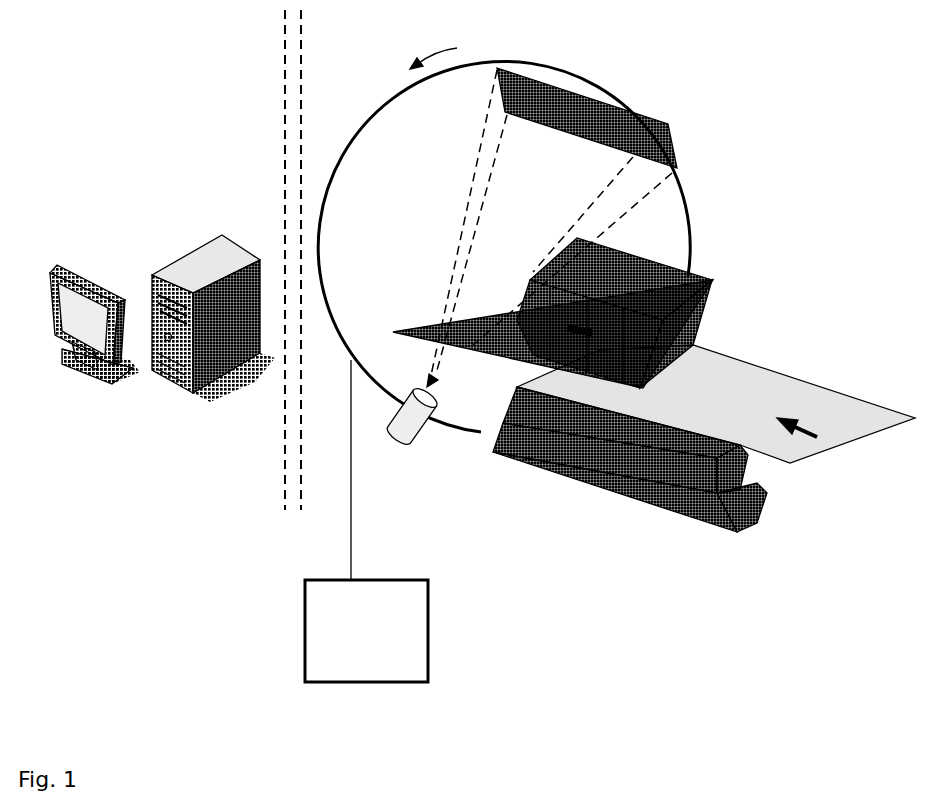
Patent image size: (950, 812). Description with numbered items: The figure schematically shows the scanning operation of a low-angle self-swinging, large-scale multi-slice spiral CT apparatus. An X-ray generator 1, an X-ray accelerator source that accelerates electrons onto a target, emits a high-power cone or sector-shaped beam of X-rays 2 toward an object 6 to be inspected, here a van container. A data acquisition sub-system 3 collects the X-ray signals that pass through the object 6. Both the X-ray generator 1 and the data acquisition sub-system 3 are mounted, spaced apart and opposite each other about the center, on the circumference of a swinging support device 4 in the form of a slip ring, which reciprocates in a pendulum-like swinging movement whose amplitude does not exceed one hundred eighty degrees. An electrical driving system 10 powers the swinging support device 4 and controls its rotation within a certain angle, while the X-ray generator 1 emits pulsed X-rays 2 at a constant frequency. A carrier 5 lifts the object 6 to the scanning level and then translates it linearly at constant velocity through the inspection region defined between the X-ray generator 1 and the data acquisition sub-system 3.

The X-ray generator 1 is at (417, 418).
The X-rays 2 is at (545, 218).
The data acquisition sub-system 3 is at (638, 140).
The swinging support device 4 is at (365, 118).
The carrier 5 is at (587, 482).
The object to be inspected 6 is at (690, 302).
The electrical driving system 10 is at (366, 521).